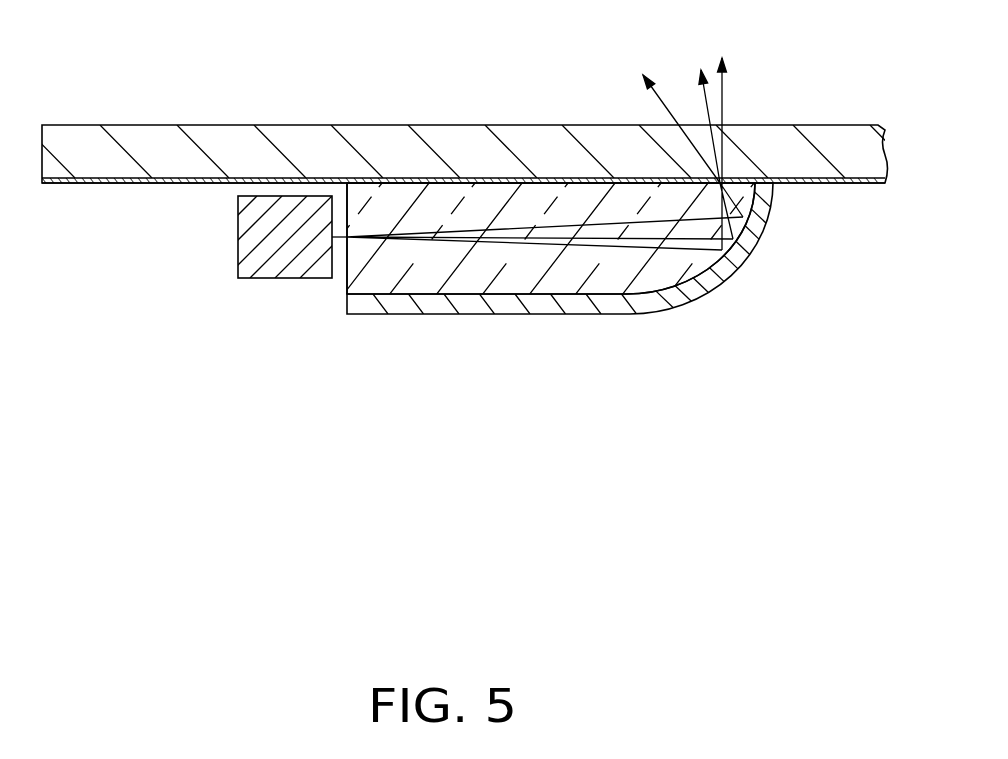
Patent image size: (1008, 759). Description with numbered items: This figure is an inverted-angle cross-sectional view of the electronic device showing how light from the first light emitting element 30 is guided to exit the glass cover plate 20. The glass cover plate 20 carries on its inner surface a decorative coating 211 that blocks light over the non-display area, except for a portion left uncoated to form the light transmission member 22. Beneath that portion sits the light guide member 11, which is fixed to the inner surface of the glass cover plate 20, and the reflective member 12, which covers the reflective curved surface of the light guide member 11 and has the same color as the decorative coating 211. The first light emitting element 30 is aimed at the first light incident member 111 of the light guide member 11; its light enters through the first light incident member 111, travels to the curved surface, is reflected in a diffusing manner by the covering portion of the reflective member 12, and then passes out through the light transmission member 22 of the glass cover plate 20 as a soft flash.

The glass cover plate 20 is at (378, 143).
The decorative coating 211 is at (845, 183).
The light transmission member 22 is at (737, 178).
The light guide member 11 is at (430, 273).
The first light incident member 111 is at (331, 285).
The reflective member 12 is at (547, 313).
The first light emitting element 30 is at (275, 237).